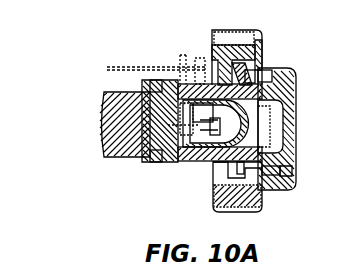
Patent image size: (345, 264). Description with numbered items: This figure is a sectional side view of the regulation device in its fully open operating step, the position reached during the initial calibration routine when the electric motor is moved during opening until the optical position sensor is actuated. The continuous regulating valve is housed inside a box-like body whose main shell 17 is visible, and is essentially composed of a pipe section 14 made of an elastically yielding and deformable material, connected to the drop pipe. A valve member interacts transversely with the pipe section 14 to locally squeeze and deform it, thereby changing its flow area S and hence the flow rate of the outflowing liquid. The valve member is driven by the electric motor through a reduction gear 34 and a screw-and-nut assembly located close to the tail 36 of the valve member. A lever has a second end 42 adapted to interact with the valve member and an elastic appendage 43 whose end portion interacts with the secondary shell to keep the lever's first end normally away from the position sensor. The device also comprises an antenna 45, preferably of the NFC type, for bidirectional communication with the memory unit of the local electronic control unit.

The pipe section 14 is at (267, 118).
The main shell 17 is at (248, 33).
The reduction gear 34 is at (120, 144).
The tail 36 is at (152, 166).
The second end 42 is at (172, 166).
The elastic appendage 43 is at (274, 213).
The antenna 45 is at (120, 68).
The flow area S is at (295, 168).